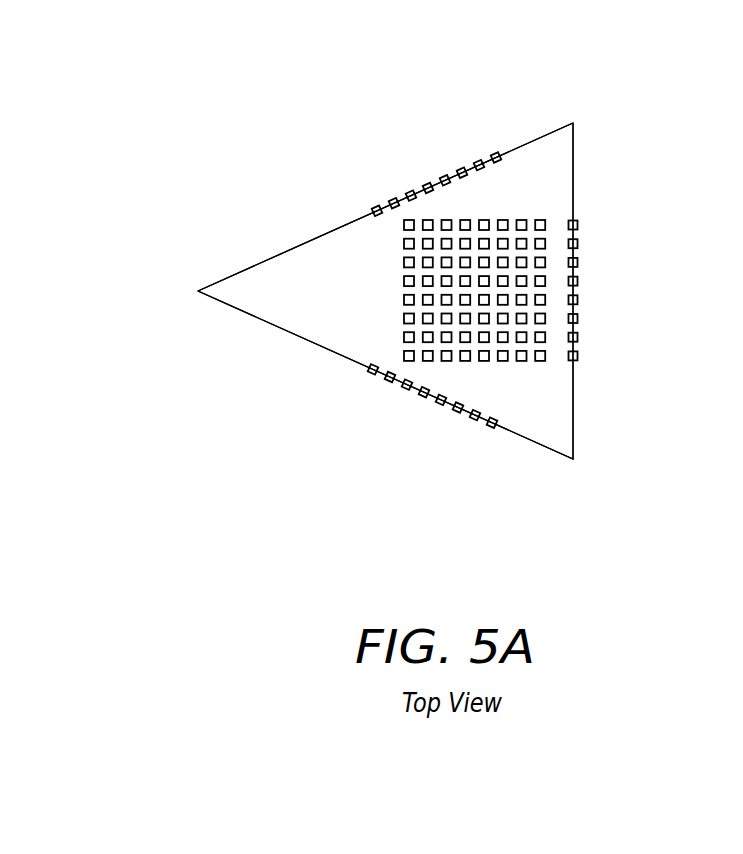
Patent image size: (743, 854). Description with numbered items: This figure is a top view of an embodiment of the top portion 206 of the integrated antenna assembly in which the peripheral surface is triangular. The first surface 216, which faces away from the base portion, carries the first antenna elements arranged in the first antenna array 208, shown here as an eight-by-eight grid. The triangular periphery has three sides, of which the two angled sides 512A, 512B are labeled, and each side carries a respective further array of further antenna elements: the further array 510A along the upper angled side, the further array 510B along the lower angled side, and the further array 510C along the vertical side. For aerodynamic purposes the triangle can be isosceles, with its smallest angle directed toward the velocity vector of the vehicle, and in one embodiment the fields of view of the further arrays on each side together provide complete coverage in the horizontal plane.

The top portion 206 is at (527, 78).
The first antenna array 208 is at (545, 199).
The first surface 216 is at (290, 302).
The further array 510A is at (428, 157).
The further array 510B is at (426, 419).
The further array 510C is at (620, 273).
The side 512A is at (313, 238).
The side 512B is at (327, 350).